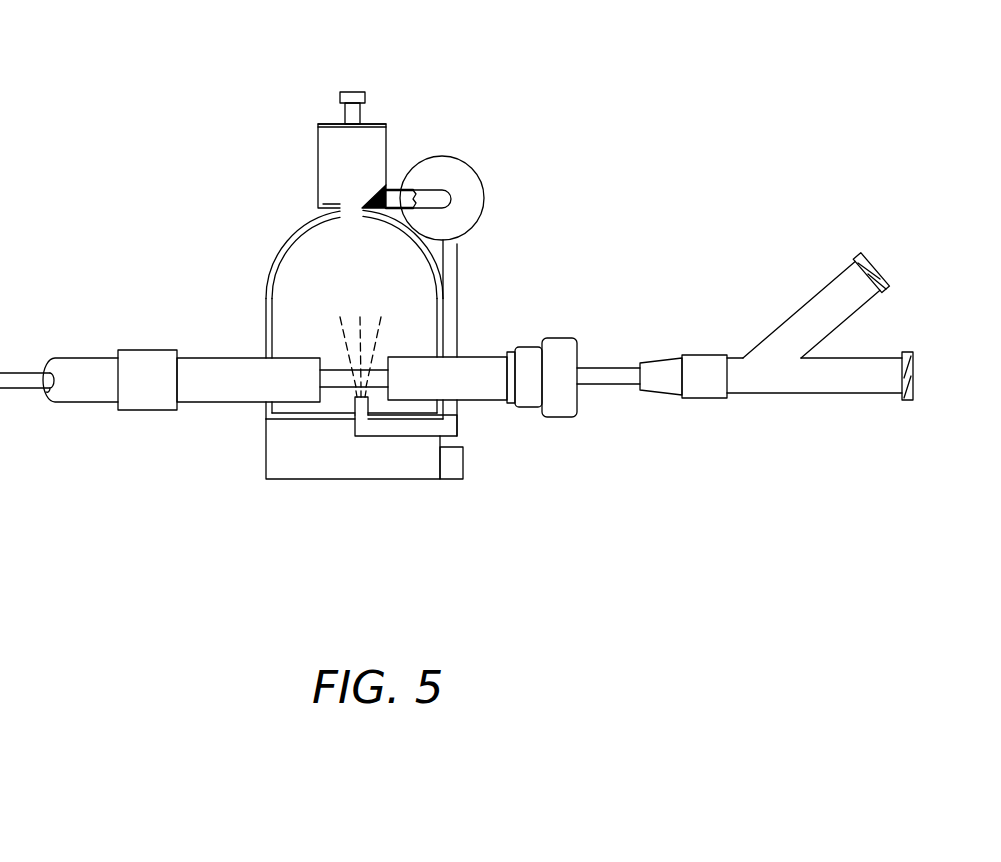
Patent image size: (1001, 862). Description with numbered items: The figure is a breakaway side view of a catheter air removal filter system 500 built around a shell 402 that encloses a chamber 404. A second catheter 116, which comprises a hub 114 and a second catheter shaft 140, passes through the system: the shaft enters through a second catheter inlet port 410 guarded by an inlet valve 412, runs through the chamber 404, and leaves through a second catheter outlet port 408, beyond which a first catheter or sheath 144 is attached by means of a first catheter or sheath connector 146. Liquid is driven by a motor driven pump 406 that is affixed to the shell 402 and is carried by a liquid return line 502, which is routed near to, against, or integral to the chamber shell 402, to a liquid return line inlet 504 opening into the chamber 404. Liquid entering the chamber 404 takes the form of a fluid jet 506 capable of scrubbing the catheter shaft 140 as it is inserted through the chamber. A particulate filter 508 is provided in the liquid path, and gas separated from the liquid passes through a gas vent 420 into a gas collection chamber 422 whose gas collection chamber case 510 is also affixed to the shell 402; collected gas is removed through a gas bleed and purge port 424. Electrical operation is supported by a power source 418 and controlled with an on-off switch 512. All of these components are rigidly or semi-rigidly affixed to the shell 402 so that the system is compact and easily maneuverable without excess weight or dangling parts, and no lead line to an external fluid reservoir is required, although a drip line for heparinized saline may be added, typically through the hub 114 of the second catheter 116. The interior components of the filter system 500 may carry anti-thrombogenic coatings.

The catheter air removal filter system 500 is at (125, 127).
The shell 402 is at (304, 314).
The chamber 404 is at (294, 297).
The gas vent 420 is at (300, 149).
The gas collection chamber case 510 is at (305, 82).
The gas collection chamber 422 is at (407, 113).
The gas bleed and purge port 424 is at (409, 64).
The particulate filter 508 is at (429, 154).
The motor driven pump 406 is at (493, 162).
The liquid return line 502 is at (508, 331).
The second catheter outlet port 408 is at (216, 335).
The first catheter or sheath 144 is at (77, 319).
The first catheter or sheath connector 146 is at (188, 409).
The second catheter shaft 140 is at (190, 420).
The second catheter inlet port 410 is at (530, 413).
The inlet valve 412 is at (609, 387).
The second catheter 116 is at (653, 334).
The hub 114 is at (797, 289).
The liquid return line inlet 504 is at (313, 479).
The fluid jet 506 is at (447, 446).
The power source 418 is at (375, 501).
The on-off switch 512 is at (506, 477).